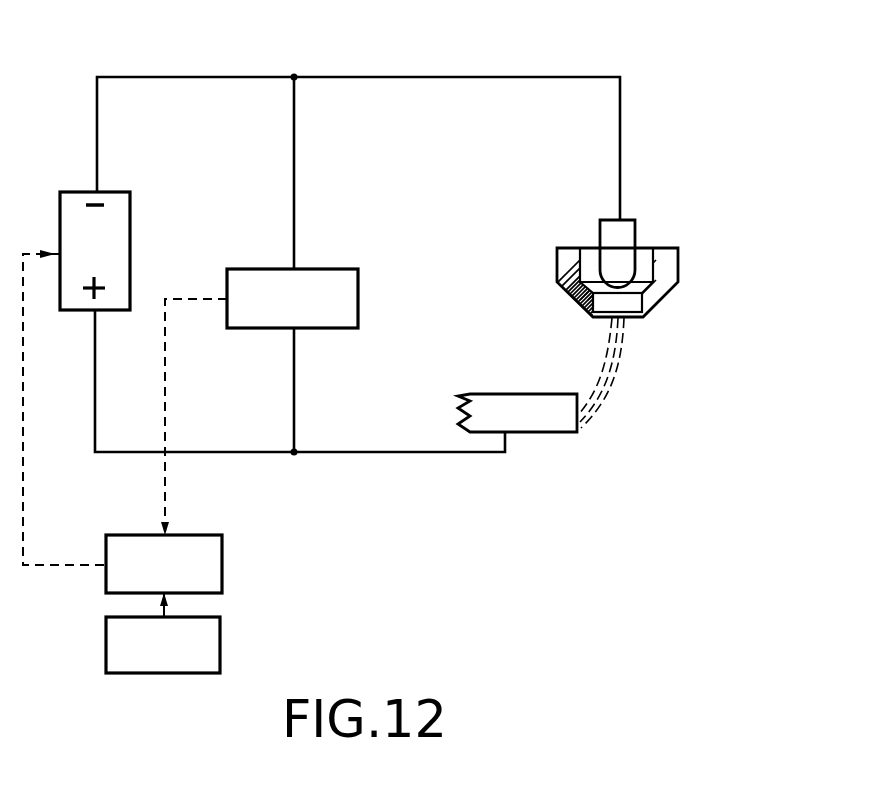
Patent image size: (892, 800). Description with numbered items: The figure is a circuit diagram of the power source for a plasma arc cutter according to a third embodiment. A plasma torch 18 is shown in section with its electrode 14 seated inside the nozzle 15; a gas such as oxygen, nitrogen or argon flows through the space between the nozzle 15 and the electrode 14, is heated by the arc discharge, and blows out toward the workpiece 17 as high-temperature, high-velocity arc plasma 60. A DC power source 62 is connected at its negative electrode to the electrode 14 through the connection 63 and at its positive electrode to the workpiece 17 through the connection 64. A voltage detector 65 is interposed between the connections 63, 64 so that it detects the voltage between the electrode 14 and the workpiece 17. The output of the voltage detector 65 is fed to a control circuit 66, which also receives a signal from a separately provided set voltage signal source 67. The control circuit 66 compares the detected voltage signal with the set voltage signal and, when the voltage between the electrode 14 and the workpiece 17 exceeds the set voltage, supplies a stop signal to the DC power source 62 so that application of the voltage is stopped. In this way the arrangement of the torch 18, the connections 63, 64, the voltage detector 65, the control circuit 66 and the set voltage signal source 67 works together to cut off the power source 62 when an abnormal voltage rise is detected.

The electrode 14 is at (598, 222).
The nozzle 15 is at (678, 248).
The workpiece 17 is at (538, 434).
The plasma torch 18 is at (649, 254).
The arc plasma 60 is at (616, 360).
The DC power source 62 is at (112, 190).
The connection 63 is at (378, 77).
The connection 64 is at (385, 454).
The voltage detector 65 is at (344, 268).
The control circuit 66 is at (222, 548).
The set voltage signal source 67 is at (221, 648).